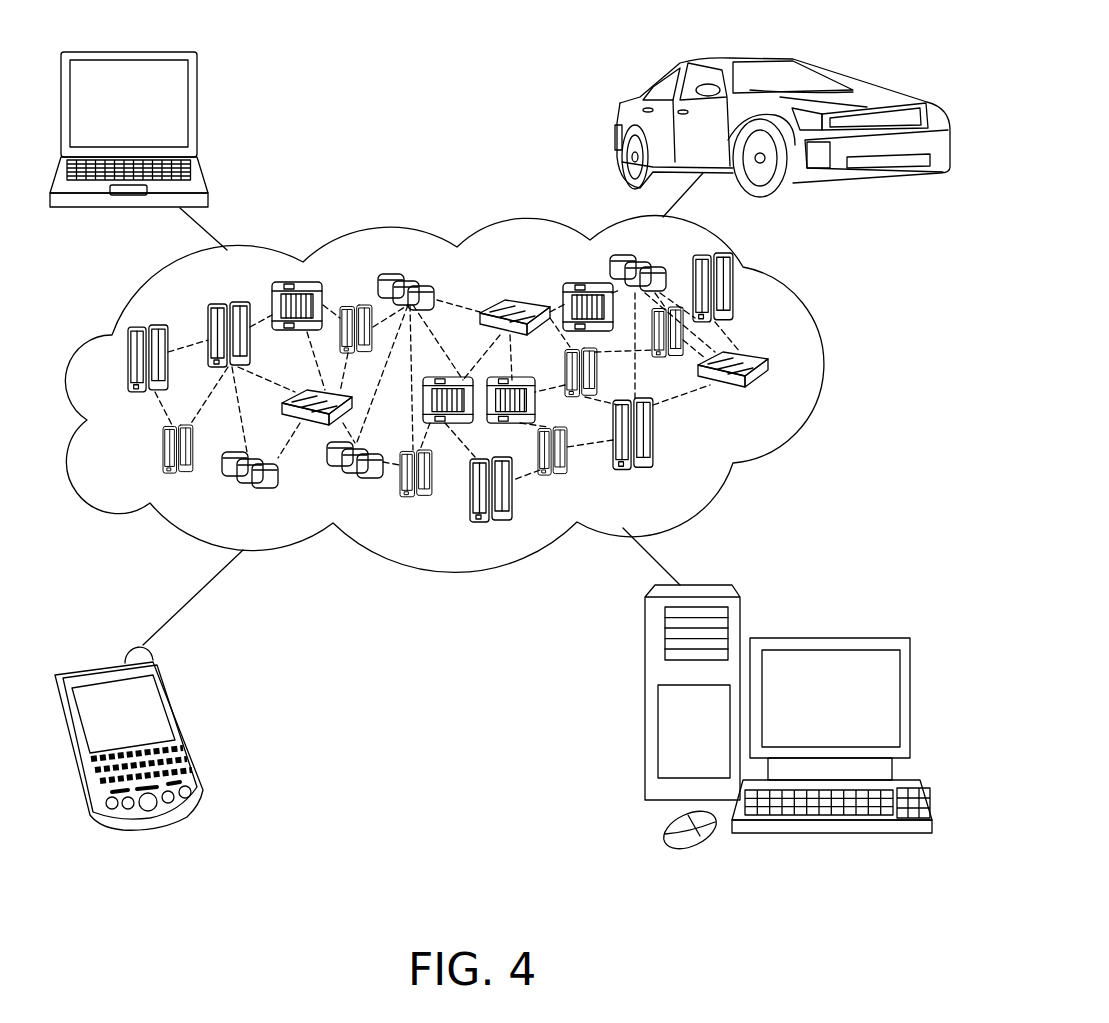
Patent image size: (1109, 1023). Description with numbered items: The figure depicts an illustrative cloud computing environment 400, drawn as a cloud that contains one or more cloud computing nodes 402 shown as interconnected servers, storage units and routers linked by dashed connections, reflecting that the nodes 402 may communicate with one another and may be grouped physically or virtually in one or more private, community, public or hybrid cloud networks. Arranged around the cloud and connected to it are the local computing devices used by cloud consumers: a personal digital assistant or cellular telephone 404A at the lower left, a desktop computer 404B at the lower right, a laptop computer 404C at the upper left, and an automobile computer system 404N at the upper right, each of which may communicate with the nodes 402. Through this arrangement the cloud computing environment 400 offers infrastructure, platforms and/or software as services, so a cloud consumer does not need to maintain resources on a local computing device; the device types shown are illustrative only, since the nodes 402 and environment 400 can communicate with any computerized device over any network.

The cloud computing environment 400 is at (780, 362).
The cloud computing nodes 402 is at (769, 392).
The personal digital assistant or cellular telephone 404A is at (175, 695).
The desktop computer 404B is at (817, 638).
The laptop computer 404C is at (197, 90).
The automobile computer system 404N is at (618, 128).